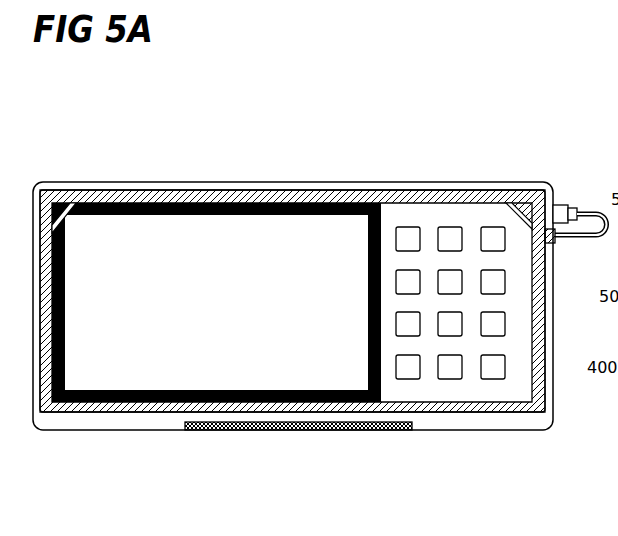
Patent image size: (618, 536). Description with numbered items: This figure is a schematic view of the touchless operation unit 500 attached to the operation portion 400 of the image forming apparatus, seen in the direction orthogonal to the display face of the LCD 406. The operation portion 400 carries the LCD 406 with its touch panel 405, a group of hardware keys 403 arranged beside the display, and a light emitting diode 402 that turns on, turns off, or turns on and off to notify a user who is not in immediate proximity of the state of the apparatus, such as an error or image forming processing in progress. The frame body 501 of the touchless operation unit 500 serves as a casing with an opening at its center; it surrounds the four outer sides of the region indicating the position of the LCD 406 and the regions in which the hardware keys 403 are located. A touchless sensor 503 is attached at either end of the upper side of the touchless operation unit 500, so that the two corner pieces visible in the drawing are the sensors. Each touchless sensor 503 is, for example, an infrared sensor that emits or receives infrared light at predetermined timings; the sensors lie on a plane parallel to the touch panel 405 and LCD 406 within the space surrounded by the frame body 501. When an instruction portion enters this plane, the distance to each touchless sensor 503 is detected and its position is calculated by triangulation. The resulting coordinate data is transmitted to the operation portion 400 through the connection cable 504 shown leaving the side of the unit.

The operation portion 400 is at (272, 182).
The light emitting diode (LED) 402 is at (267, 431).
The hardware keys 403 is at (448, 226).
The touch panel 405 is at (208, 308).
The LCD 406 is at (241, 308).
The touchless operation unit 500 is at (207, 190).
The frame body 501 is at (152, 190).
The touchless sensor 503 is at (64, 200).
The connection cable 504 is at (588, 205).